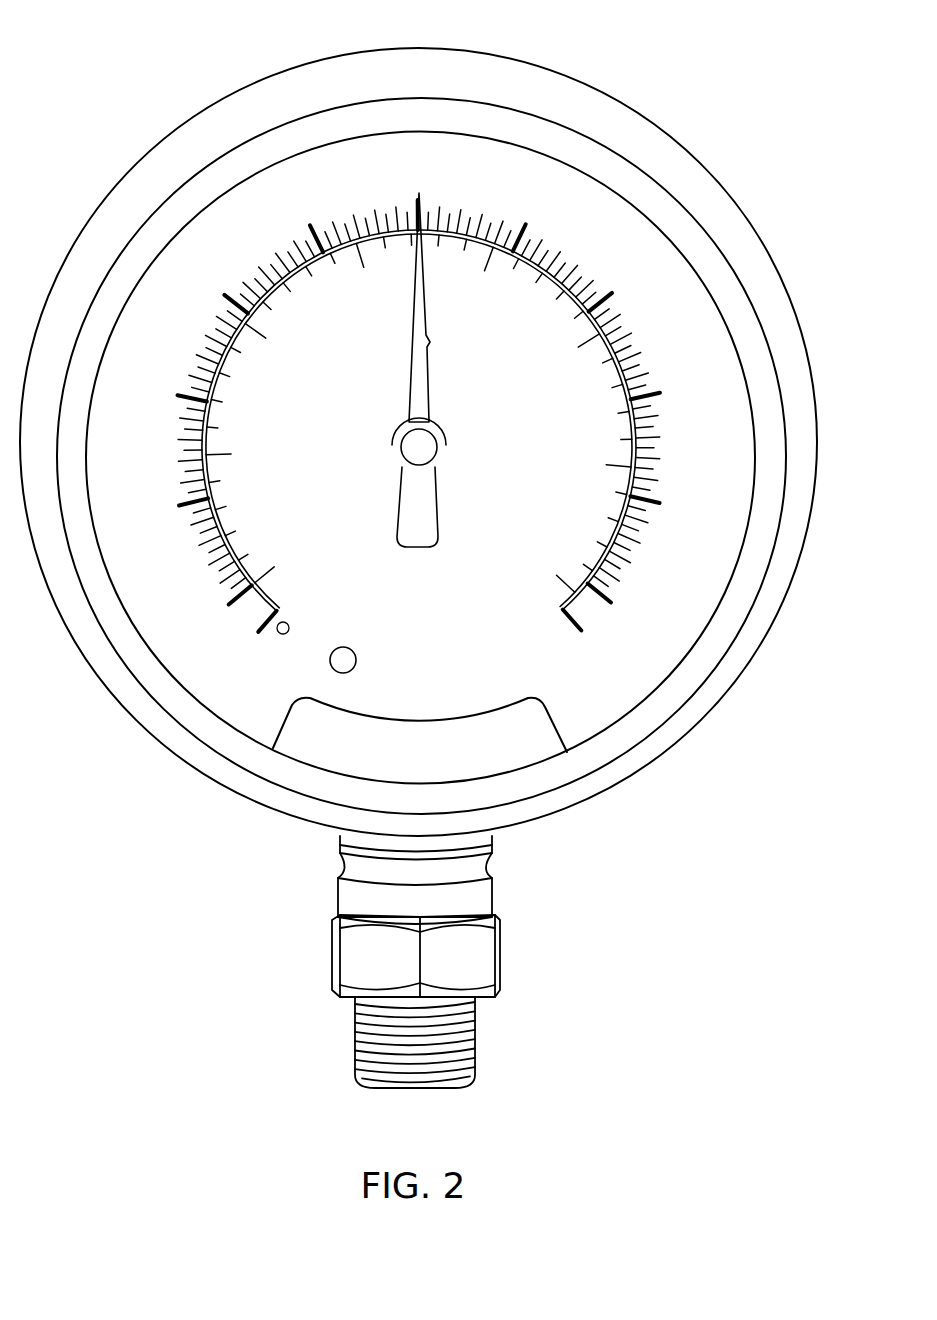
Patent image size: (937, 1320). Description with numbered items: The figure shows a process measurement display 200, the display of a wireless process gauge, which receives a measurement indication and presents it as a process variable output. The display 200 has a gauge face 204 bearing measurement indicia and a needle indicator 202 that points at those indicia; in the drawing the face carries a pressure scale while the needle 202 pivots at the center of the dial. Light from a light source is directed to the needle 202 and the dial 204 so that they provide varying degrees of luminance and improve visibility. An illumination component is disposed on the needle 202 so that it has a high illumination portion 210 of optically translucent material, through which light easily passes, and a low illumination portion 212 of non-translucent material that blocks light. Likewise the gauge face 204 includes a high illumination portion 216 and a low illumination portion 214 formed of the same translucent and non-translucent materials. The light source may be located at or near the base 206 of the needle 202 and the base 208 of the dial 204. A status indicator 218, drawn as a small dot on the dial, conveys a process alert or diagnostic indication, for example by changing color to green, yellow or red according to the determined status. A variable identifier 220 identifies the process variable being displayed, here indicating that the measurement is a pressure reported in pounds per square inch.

The process measurement display 200 is at (668, 131).
The needle indicator 202 is at (400, 247).
The gauge face 204 is at (615, 238).
The base of needle 206 is at (553, 708).
The base of dial 208 is at (440, 468).
The high illumination portion 210 is at (428, 303).
The low illumination portion 212 is at (470, 230).
The low illumination portion 214 is at (213, 260).
The high illumination portion 216 is at (167, 286).
The status indicator 218 is at (330, 662).
The variable identifier 220 is at (247, 662).